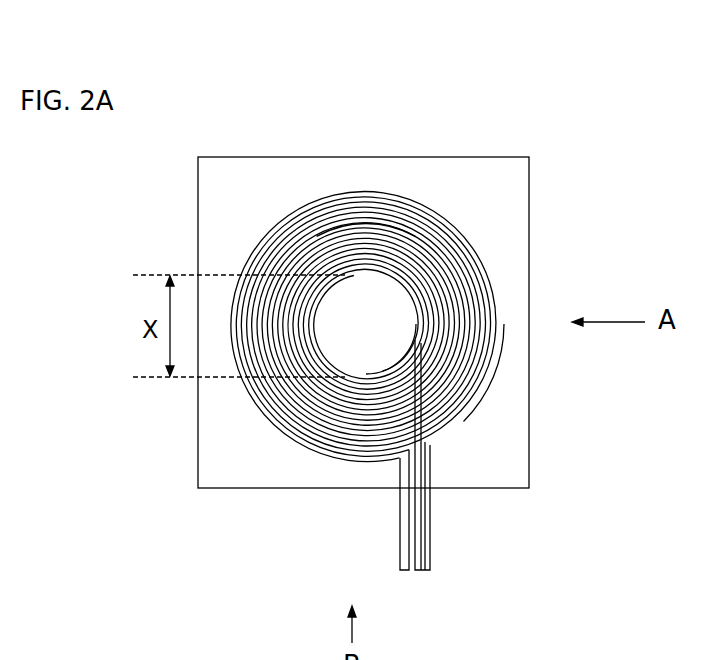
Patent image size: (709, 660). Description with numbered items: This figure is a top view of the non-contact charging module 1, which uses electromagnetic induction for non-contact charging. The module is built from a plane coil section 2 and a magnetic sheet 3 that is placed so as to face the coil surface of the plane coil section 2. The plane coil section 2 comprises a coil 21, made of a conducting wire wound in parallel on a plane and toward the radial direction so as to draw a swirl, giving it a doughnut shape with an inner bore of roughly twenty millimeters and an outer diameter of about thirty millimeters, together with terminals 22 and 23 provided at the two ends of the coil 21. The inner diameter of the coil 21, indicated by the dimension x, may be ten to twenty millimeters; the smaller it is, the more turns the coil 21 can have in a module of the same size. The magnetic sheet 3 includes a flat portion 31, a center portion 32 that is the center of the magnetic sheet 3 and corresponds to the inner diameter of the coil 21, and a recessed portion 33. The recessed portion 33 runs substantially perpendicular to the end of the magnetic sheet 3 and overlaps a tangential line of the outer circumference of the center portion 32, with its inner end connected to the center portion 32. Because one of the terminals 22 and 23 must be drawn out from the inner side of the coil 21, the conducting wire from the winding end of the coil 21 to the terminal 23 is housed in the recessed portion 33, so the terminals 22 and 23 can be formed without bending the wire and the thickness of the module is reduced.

The non-contact charging module 1 is at (522, 142).
The plane coil section 2 is at (388, 185).
The coil 21 is at (362, 223).
The terminal 22 is at (398, 522).
The terminal 23 is at (420, 570).
The magnetic sheet 3 is at (488, 428).
The flat portion 31 is at (507, 222).
The center portion 32 is at (382, 348).
The recessed portion 33 is at (428, 473).